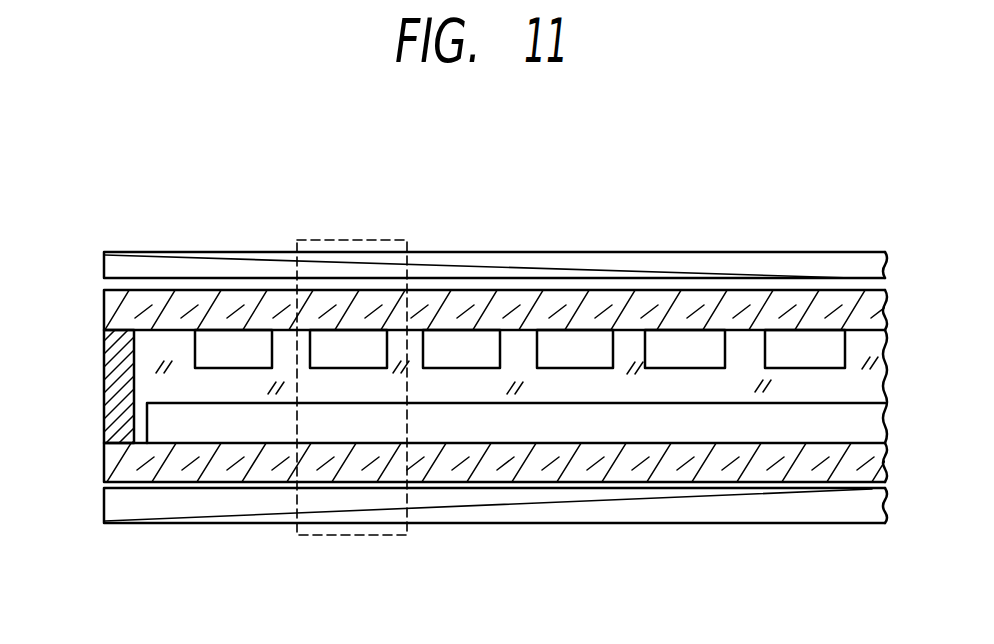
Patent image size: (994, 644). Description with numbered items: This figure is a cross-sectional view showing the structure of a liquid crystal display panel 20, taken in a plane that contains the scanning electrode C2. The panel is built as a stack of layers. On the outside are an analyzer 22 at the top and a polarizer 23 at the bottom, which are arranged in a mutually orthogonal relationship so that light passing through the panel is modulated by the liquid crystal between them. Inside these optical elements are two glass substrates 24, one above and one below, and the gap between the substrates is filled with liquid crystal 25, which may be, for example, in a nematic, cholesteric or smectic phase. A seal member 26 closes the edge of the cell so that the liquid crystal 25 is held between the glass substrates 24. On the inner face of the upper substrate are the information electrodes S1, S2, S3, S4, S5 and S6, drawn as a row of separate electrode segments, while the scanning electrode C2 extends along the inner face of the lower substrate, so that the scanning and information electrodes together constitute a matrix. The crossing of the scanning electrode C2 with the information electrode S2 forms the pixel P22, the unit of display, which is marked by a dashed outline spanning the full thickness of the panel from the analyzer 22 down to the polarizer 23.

The liquid crystal display device 20 is at (605, 212).
The analyzer 22 is at (828, 255).
The polarizer 23 is at (550, 512).
The glass substrates 24 is at (738, 295).
The liquid crystal 25 is at (797, 390).
The seal member 26 is at (104, 398).
The scanning electrode C2 is at (703, 427).
The pixel P22 is at (407, 240).
The information electrode S1 is at (233, 349).
The information electrode S2 is at (348, 349).
The information electrode S3 is at (461, 349).
The information electrode S4 is at (575, 349).
The information electrode S5 is at (685, 349).
The information electrode S6 is at (805, 349).